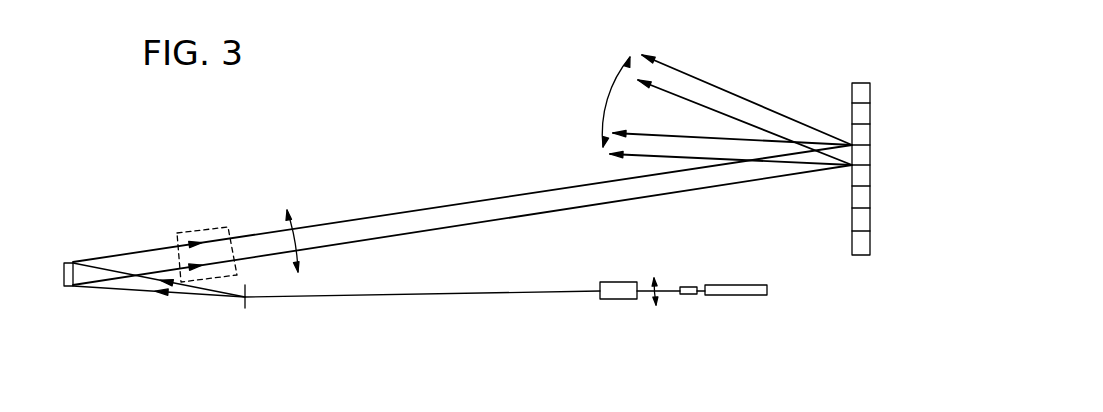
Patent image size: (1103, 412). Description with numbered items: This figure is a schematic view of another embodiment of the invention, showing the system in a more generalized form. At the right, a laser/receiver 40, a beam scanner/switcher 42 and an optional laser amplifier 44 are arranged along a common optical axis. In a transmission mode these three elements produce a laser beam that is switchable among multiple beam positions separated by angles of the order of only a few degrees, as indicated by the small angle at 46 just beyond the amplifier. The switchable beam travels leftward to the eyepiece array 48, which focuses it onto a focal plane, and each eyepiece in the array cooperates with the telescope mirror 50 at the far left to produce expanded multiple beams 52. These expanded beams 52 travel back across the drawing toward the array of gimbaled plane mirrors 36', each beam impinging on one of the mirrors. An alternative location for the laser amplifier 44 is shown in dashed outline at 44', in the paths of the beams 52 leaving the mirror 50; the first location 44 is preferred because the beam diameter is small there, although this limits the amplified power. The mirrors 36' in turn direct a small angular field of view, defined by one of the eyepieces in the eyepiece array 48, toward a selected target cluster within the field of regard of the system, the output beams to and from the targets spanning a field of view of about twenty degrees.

The array of gimbaled plane mirrors 36' is at (672, 135).
The laser/receiver 40 is at (722, 285).
The beam scanner/switcher 42 is at (685, 287).
The laser amplifier 44 is at (556, 260).
The alternative location for the laser amplifier 44' is at (215, 238).
The beam positions separated by small angles 46 is at (660, 291).
The eyepiece array 48 is at (245, 296).
The telescope mirror 50 is at (66, 262).
The expanded multiple beams 52 is at (371, 214).